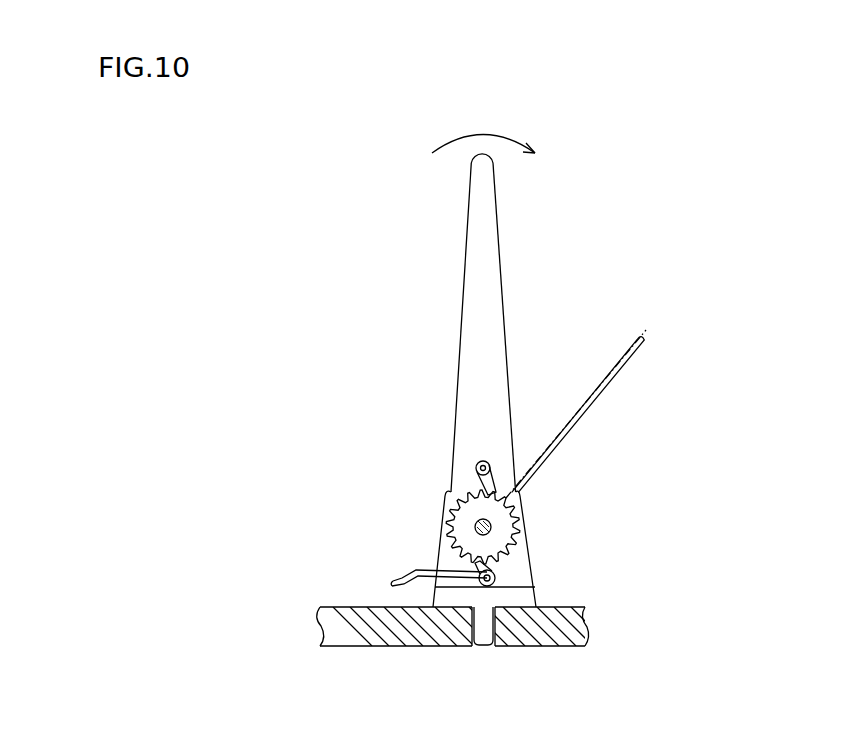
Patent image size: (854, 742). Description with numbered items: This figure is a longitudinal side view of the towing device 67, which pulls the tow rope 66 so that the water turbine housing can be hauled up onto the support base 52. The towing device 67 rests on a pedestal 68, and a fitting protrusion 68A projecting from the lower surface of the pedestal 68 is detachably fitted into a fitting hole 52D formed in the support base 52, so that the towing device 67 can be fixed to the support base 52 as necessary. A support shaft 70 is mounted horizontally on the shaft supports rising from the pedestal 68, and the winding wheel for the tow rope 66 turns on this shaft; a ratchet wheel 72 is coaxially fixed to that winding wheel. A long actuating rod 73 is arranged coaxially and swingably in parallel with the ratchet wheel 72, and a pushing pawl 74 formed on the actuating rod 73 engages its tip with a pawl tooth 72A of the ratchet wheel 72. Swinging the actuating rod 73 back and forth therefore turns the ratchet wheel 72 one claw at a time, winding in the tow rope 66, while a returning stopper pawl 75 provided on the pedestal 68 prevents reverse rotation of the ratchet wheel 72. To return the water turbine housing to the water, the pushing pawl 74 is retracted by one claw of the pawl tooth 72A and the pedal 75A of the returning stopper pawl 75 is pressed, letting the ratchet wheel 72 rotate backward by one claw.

The support base 52 is at (575, 607).
The fitting hole 52D is at (472, 630).
The tow rope 66 is at (589, 410).
The towing device 67 is at (613, 290).
The pedestal 68 is at (536, 600).
The fitting protrusion 68A is at (490, 641).
The support shaft 70 is at (477, 524).
The ratchet wheel 72 is at (446, 548).
The pawl tooth 72A is at (513, 490).
The actuating rod 73 is at (501, 253).
The pushing pawl 74 is at (477, 467).
The returning stopper pawl 75 is at (496, 577).
The pedal 75A is at (397, 580).